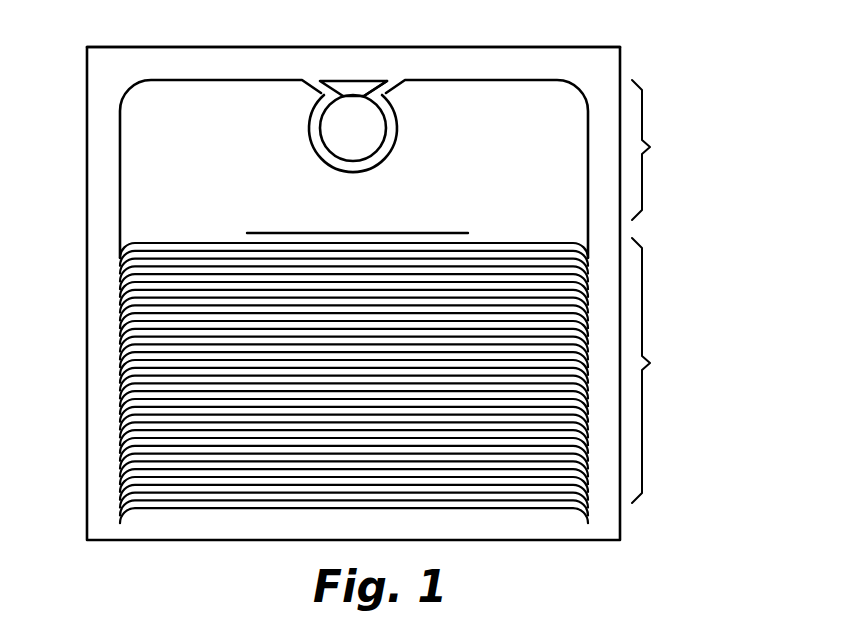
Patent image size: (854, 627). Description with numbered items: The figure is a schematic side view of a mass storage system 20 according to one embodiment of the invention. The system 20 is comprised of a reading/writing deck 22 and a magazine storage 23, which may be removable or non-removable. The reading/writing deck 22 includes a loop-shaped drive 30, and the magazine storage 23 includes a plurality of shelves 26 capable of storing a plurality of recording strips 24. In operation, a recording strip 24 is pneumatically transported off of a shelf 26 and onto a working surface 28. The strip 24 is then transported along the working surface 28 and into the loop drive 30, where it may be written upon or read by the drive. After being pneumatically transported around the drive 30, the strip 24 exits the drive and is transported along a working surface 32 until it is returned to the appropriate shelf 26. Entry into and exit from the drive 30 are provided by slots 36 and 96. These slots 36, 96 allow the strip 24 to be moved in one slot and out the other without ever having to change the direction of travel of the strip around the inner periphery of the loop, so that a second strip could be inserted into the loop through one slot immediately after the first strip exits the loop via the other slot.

The mass storage system 20 is at (662, 43).
The reading/writing deck 22 is at (660, 150).
The magazine storage 23 is at (659, 370).
The recording strip 24 is at (368, 233).
The shelf 26 is at (545, 242).
The working surface 28 is at (118, 165).
The loop-shaped drive 30 is at (402, 138).
The working surface 32 is at (520, 79).
The slot 36 is at (318, 90).
The slot 96 is at (392, 88).